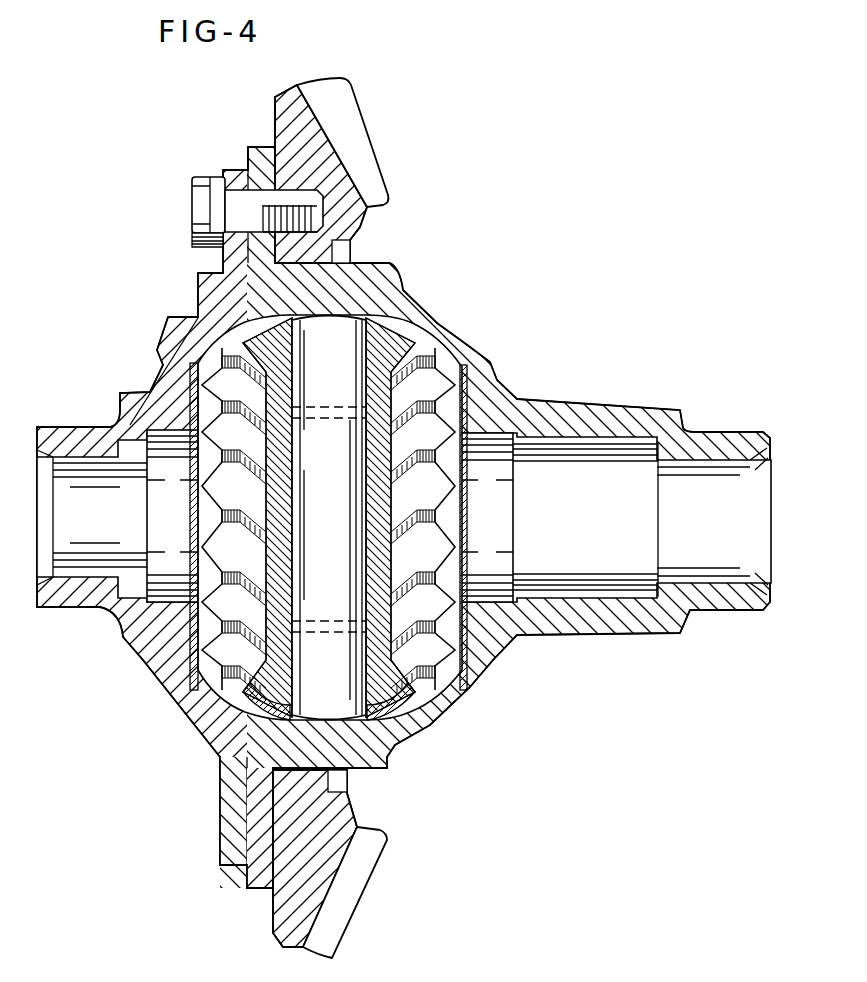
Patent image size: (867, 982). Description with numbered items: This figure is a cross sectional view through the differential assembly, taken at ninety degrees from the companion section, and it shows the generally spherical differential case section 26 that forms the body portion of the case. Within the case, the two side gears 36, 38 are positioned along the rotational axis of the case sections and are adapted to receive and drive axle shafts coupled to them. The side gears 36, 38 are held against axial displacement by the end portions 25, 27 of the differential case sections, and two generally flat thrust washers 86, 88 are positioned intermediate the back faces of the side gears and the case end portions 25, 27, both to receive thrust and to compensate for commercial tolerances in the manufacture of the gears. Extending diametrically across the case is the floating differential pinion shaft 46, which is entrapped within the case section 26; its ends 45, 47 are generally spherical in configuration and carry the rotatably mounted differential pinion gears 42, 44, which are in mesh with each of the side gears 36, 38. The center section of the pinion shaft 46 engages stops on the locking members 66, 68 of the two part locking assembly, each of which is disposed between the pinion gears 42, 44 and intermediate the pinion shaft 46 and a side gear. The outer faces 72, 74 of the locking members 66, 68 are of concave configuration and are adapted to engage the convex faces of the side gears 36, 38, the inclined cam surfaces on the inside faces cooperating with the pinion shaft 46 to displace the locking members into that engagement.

The end portion of differential case section 25 is at (165, 378).
The differential case section 26 is at (505, 360).
The end portion of differential case section 27 is at (486, 393).
The side gear 36 is at (181, 523).
The side gear 38 is at (493, 523).
The differential pinion gear 42 is at (400, 348).
The differential pinion gear 44 is at (402, 720).
The end of differential pinion pin 45 is at (347, 314).
The differential pinion shaft 46 is at (327, 518).
The end of differential pinion pin 47 is at (388, 748).
The locking member 66 is at (288, 451).
The locking member 68 is at (362, 541).
The outer face of locking member 72 is at (243, 493).
The outer face of locking member 74 is at (430, 498).
The thrust washer 86 is at (195, 657).
The thrust washer 88 is at (484, 652).